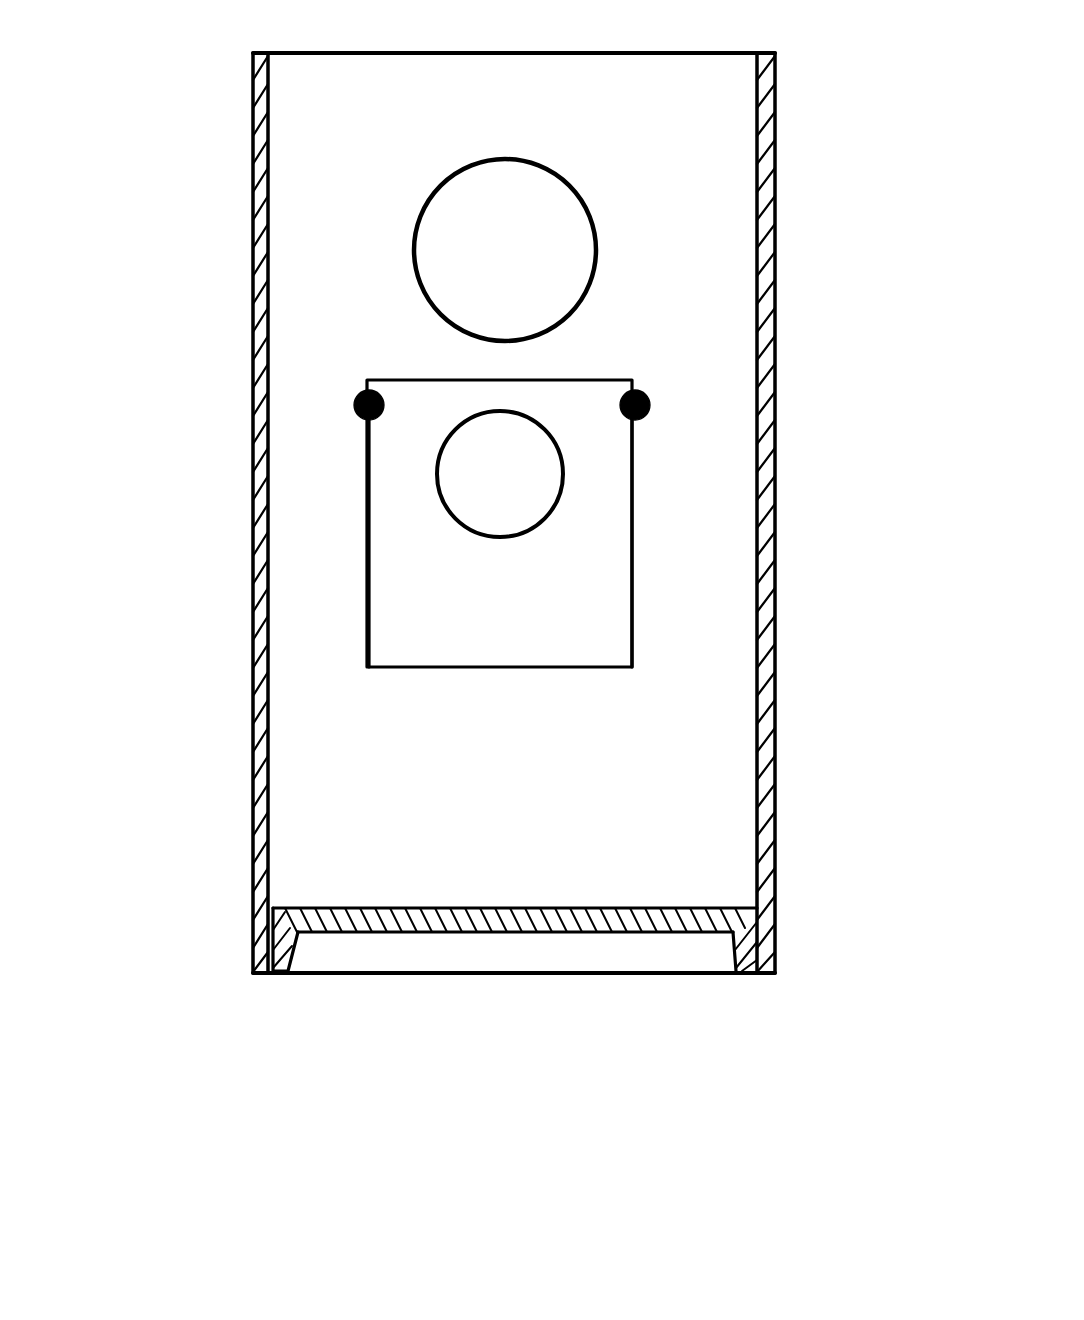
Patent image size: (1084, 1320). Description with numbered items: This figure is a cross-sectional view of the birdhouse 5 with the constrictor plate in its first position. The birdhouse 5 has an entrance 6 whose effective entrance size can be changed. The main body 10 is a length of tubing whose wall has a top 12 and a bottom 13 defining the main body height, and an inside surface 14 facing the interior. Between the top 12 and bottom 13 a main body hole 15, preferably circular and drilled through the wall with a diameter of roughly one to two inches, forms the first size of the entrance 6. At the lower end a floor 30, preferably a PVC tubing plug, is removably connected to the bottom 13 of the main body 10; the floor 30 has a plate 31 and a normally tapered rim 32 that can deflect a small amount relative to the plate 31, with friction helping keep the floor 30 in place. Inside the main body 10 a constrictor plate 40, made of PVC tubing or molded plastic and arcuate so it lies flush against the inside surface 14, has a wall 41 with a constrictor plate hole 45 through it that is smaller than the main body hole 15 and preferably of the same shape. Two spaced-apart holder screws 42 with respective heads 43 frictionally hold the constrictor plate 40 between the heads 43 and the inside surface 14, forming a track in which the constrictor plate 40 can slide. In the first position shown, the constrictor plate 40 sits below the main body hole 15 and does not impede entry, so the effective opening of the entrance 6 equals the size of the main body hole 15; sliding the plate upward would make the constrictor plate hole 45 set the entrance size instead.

The birdhouse 5 is at (150, 832).
The main body 10 is at (248, 505).
The top 12 is at (768, 52).
The bottom 13 is at (777, 975).
The inside surface 14 is at (755, 575).
The main body hole 15 is at (563, 180).
The entrance 6 is at (456, 178).
The floor 30 is at (370, 976).
The plate 31 is at (577, 932).
The rim 32 is at (730, 952).
The constrictor plate 40 is at (426, 672).
The wall 41 is at (555, 643).
The holder screws 42 is at (364, 395).
The heads 43 is at (360, 416).
The constrictor plate hole 45 is at (488, 538).